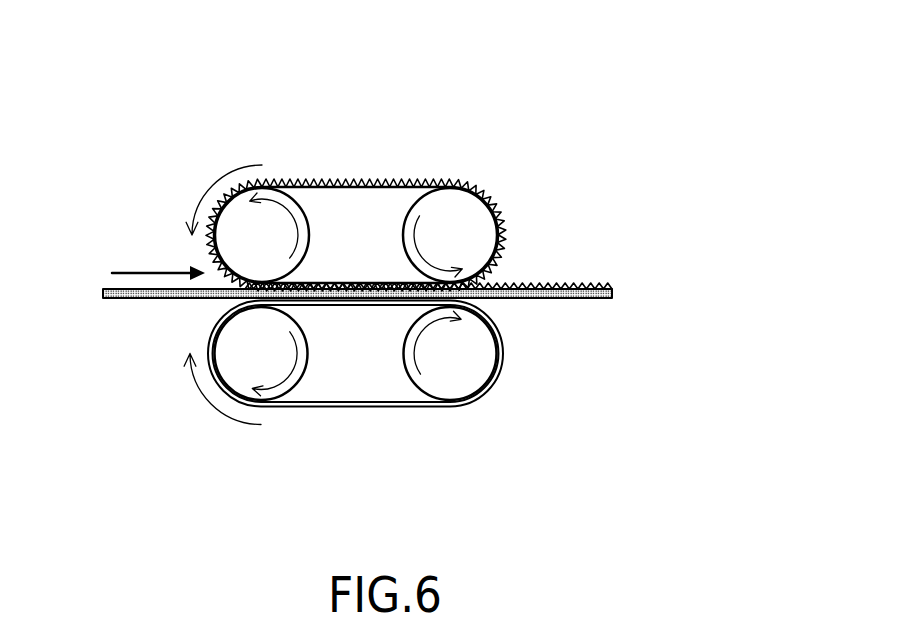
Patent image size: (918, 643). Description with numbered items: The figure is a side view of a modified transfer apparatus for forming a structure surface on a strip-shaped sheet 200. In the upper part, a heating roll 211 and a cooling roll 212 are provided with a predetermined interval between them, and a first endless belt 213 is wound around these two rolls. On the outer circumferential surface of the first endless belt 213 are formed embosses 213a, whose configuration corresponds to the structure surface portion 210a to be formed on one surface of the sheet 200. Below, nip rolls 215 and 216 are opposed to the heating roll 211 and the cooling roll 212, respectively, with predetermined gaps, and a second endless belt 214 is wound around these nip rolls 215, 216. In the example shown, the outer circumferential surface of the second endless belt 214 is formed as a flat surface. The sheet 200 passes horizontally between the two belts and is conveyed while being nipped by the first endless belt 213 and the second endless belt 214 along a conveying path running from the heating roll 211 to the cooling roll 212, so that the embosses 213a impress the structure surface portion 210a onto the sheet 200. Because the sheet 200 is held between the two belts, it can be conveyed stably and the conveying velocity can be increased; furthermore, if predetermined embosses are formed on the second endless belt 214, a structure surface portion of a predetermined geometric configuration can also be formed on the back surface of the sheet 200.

The strip-shaped sheet 200 is at (145, 298).
The structure surface portion 210a is at (563, 285).
The heating roll 211 is at (250, 215).
The cooling roll 212 is at (472, 218).
The first endless belt 213 is at (318, 182).
The embosses 213a is at (383, 178).
The second endless belt 214 is at (355, 403).
The nip roll 215 is at (225, 368).
The nip roll 216 is at (453, 375).